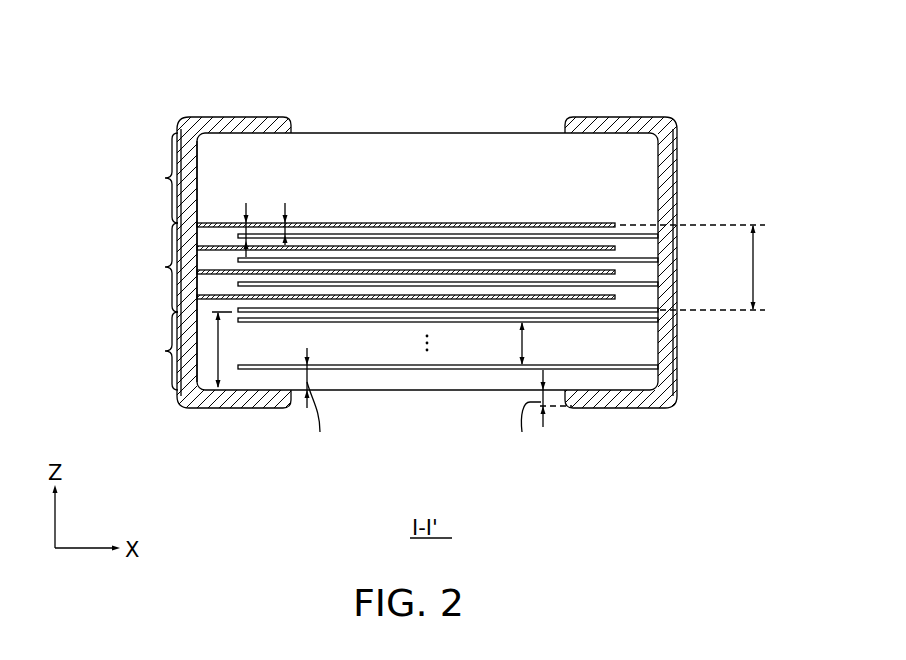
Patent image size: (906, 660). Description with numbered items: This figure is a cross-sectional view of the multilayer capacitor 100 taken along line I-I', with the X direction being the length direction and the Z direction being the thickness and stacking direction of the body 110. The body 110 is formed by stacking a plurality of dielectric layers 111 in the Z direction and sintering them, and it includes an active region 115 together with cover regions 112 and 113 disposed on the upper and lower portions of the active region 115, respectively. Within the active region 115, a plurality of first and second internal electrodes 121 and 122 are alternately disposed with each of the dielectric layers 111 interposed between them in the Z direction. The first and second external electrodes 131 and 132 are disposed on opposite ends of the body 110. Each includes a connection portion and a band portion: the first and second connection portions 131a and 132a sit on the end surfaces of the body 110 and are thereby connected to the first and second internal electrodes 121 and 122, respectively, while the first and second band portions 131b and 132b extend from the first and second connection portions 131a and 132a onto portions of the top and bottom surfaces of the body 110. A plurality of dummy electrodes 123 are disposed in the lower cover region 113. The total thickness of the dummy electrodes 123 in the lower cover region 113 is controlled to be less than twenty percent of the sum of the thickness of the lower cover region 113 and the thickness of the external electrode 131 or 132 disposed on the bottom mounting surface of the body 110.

The multilayer capacitor 100 is at (594, 48).
The body 110 is at (425, 133).
The dielectric layer 111 is at (210, 238).
The cover region 112 is at (146, 178).
The lower cover region 113 is at (147, 351).
The active region 115 is at (147, 267).
The first internal electrode 121 is at (615, 249).
The second internal electrode 122 is at (638, 282).
The dummy electrode 123 is at (407, 370).
The first external electrode 131 is at (267, 462).
The first connection portion 131a is at (192, 354).
The first band portion 131b is at (243, 397).
The second external electrode 132 is at (707, 462).
The second connection portion 132a is at (668, 357).
The second band portion 132b is at (605, 397).